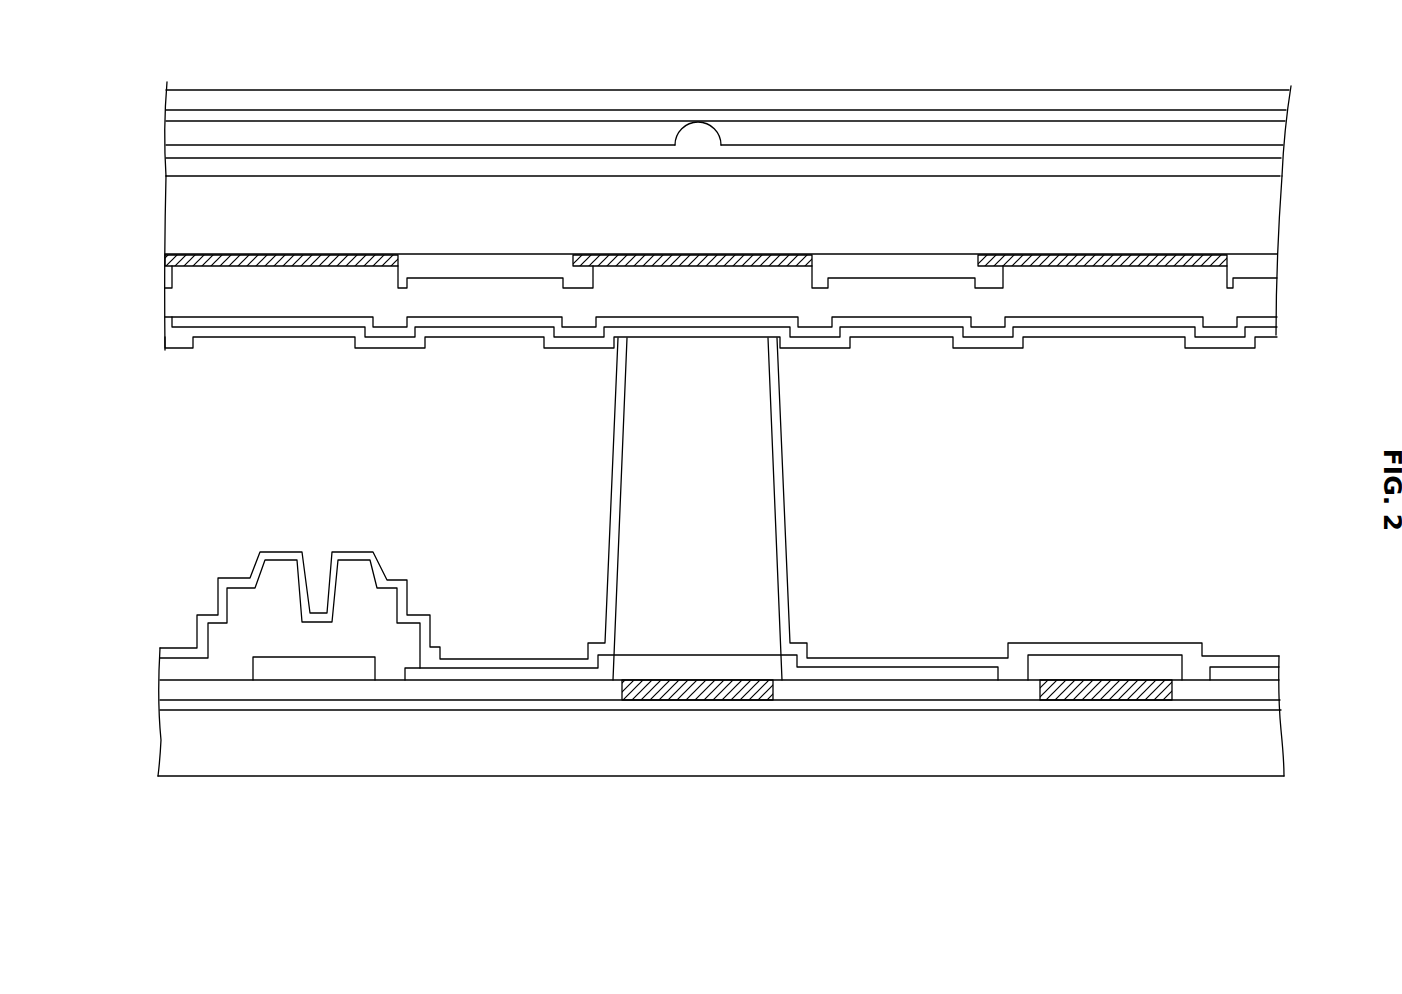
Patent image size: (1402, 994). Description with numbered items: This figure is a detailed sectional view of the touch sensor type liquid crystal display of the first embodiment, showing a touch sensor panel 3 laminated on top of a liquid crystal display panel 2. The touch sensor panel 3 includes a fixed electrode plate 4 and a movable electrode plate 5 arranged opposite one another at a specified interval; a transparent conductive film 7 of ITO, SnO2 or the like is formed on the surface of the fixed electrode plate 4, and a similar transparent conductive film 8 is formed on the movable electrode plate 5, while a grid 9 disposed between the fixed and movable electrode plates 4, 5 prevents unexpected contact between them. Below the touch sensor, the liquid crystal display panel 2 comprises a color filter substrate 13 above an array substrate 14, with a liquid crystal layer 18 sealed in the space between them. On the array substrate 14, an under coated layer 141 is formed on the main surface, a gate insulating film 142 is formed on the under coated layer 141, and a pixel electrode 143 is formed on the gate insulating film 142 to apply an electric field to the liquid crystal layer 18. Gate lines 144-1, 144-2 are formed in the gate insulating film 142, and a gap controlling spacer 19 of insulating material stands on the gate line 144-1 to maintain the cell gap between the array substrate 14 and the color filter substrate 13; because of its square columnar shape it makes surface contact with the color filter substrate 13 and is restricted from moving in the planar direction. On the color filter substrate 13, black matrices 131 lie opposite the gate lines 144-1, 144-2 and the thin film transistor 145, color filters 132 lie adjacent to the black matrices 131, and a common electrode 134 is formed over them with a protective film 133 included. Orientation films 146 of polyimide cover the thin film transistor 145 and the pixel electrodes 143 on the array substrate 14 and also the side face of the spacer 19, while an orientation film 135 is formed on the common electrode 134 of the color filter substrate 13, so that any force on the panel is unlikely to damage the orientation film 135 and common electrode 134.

The liquid crystal display panel 2 is at (140, 778).
The touch sensor panel 3 is at (145, 87).
The fixed electrode plate 4 is at (428, 165).
The movable electrode plate 5 is at (1037, 93).
The transparent conductive film 7 is at (347, 153).
The transparent conductive film 8 is at (1097, 113).
The grid 9 is at (700, 138).
The color filter substrate 13 is at (1285, 228).
The array substrate 14 is at (702, 782).
The liquid crystal layer 18 is at (1237, 438).
The gap controlling spacer 19 is at (650, 478).
The black matrix 131 is at (290, 258).
The color filter 132 is at (476, 268).
The protective film 133 is at (655, 285).
The common electrode 134 is at (510, 325).
The orientation film 135 is at (462, 343).
The under coated layer 141 is at (355, 705).
The gate insulating film 142 is at (528, 690).
The pixel electrode 143 is at (555, 672).
The gate line 144-1 is at (670, 690).
The gate line 144-2 is at (1105, 688).
The thin film transistor 145 is at (358, 570).
The orientation film 146 is at (781, 452).